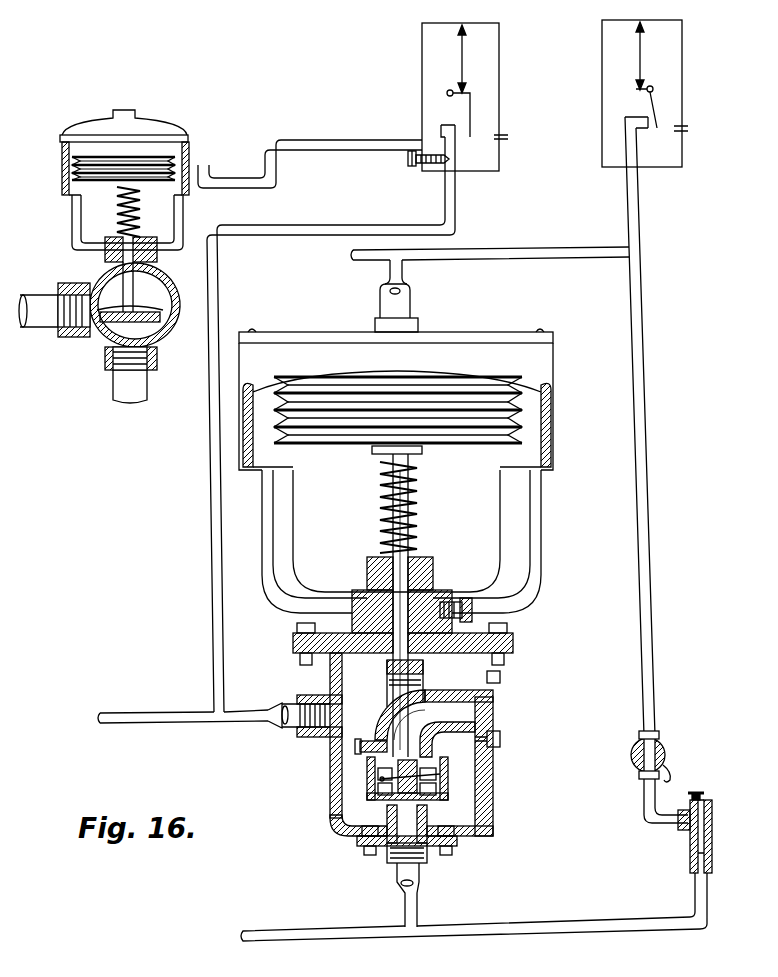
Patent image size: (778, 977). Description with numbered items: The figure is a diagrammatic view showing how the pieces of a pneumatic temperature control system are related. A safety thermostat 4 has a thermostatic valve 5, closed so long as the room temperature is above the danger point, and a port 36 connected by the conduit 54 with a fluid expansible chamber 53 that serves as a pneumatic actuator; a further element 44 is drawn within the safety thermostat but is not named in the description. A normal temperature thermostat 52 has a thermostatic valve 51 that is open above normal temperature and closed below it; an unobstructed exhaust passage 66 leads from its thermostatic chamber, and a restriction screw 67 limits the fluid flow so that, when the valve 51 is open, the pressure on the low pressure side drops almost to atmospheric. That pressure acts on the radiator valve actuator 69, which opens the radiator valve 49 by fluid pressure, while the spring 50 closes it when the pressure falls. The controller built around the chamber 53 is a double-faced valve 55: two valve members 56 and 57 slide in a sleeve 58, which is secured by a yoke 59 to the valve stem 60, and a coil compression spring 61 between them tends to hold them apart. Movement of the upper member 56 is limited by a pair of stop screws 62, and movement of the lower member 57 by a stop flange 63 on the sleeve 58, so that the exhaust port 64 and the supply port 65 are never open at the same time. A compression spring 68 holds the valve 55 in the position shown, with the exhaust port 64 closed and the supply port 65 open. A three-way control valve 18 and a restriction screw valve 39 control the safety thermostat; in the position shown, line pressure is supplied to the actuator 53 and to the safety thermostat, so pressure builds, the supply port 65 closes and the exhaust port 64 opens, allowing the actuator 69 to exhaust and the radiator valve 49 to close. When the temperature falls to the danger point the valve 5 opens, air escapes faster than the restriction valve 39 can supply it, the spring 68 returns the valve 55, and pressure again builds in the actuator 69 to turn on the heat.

The safety thermostat 4 is at (687, 58).
The thermostatic valve 5 is at (660, 113).
The port 36 is at (624, 117).
The contact 44 is at (690, 131).
The three-way control valve 18 is at (667, 749).
The restriction screw valve 39 is at (712, 833).
The radiator valve 49 is at (102, 330).
The spring 50 is at (140, 216).
The thermostatic valve 51 is at (472, 115).
The normal temperature thermostat 52 is at (422, 57).
The fluid expansible chamber 53 is at (503, 410).
The conduit 54 is at (567, 250).
The double-faced valve 55 is at (449, 786).
The upper valve member 56 is at (374, 772).
The lower valve member 57 is at (374, 789).
The sleeve 58 is at (445, 772).
The yoke 59 is at (400, 694).
The valve stem 60 is at (406, 573).
The coil compression spring 61 is at (450, 779).
The stop screws 62 is at (380, 745).
The stop flange 63 is at (440, 803).
The exhaust port 64 is at (412, 748).
The supply port 65 is at (390, 818).
The exhaust passage 66 is at (508, 137).
The restriction screw 67 is at (418, 167).
The compression spring 68 is at (380, 501).
The radiator valve actuator 69 is at (64, 190).